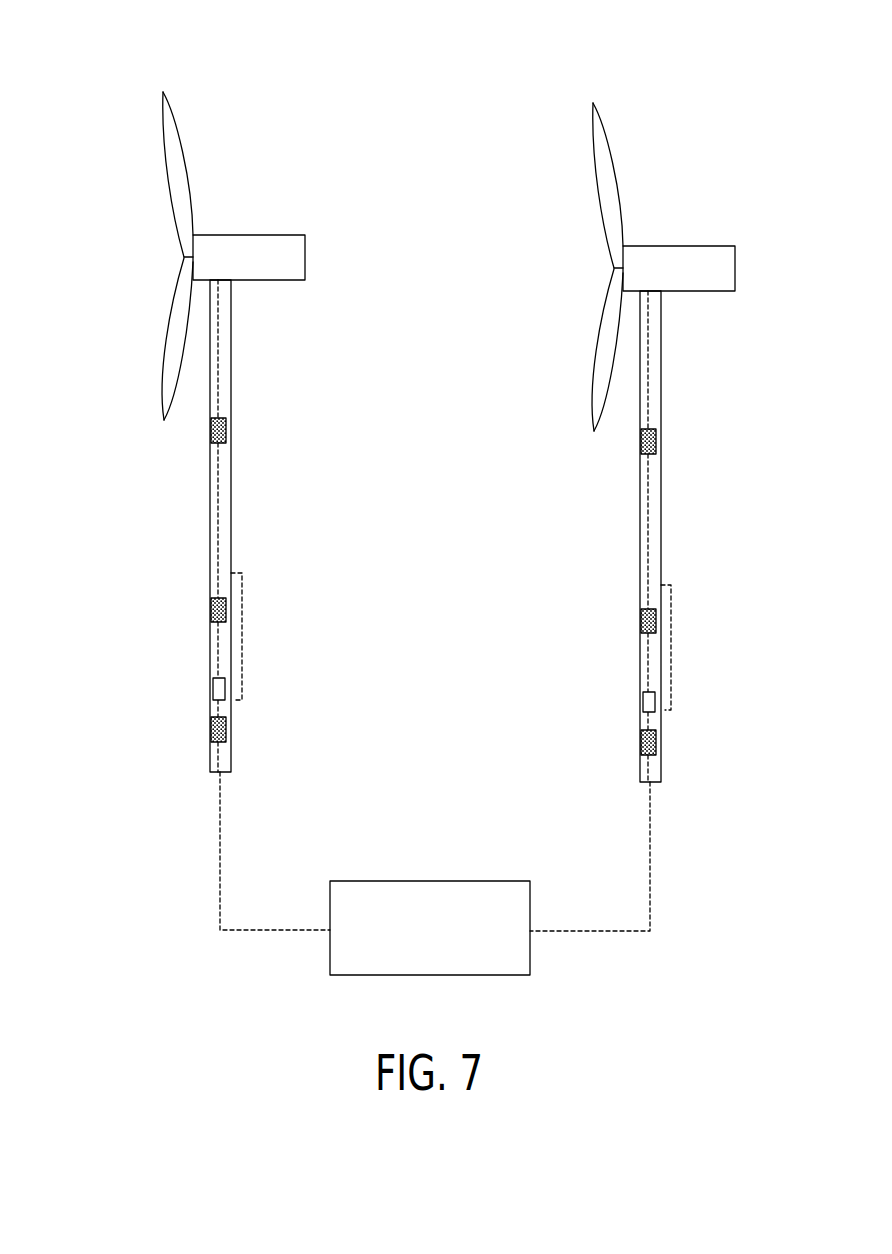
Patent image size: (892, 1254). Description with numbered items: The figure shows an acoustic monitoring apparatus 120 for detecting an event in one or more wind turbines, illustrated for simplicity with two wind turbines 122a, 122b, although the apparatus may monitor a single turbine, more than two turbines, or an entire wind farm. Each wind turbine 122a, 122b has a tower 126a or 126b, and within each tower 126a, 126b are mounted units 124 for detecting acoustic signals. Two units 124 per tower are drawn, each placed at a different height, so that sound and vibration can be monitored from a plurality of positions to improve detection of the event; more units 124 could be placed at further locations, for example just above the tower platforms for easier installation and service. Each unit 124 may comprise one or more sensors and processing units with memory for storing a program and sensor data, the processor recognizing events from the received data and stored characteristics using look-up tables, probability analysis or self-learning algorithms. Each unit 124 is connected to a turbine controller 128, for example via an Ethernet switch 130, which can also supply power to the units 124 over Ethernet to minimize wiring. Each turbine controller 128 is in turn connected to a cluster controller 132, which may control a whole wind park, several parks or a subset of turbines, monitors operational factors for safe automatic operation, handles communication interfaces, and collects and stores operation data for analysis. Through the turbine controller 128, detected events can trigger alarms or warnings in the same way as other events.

The apparatus 120 is at (128, 94).
The wind turbine 122a is at (273, 206).
The wind turbine 122b is at (703, 218).
The unit 124 is at (298, 426).
The tower 126a is at (233, 336).
The tower 126b is at (663, 348).
The turbine controller 128 is at (298, 746).
The Ethernet switch 130 is at (298, 691).
The cluster controller 132 is at (447, 943).